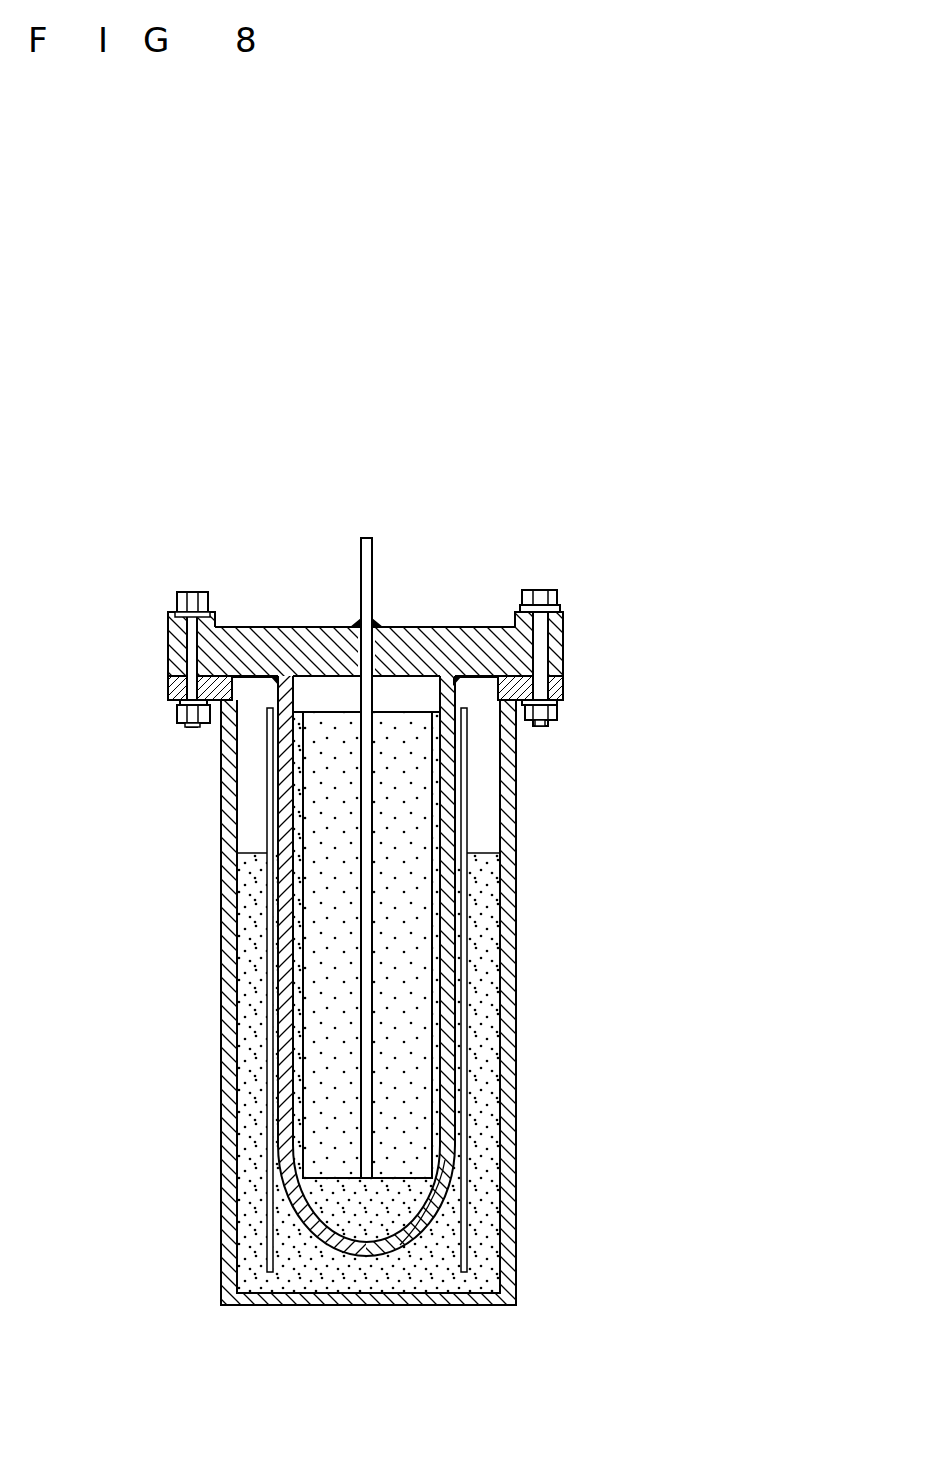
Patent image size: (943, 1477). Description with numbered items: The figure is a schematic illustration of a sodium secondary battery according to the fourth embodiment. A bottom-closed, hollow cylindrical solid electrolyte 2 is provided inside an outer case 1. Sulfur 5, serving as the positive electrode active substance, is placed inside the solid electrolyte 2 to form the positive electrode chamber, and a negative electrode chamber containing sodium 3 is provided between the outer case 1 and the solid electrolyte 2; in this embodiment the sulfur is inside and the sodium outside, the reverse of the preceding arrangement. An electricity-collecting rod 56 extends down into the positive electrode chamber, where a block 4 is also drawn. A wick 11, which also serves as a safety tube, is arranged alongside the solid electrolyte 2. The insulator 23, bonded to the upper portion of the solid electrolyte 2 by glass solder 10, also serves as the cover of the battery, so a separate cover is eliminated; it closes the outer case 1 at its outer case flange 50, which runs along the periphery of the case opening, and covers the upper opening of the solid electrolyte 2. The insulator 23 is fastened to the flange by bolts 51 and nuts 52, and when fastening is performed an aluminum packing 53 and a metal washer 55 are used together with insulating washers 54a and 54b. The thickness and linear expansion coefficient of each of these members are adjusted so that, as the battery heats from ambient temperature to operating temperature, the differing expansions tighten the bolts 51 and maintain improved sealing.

The outer case 1 is at (508, 1052).
The solid electrolyte 2 is at (447, 992).
The sodium 3 is at (490, 1238).
The heat storage block 4 is at (415, 930).
The sulfur 5 is at (420, 1202).
The glass solder 10 is at (352, 624).
The wick 11 is at (465, 1108).
The insulator 23 is at (558, 668).
The outer case flange 50 is at (560, 692).
The bolts 51 is at (550, 592).
The nuts 52 is at (550, 726).
The packing 53 is at (510, 675).
The insulating washer 54a is at (560, 606).
The insulating washer 54b is at (560, 712).
The metal washer 55 is at (562, 622).
The electricity-collecting rod 56 is at (372, 550).